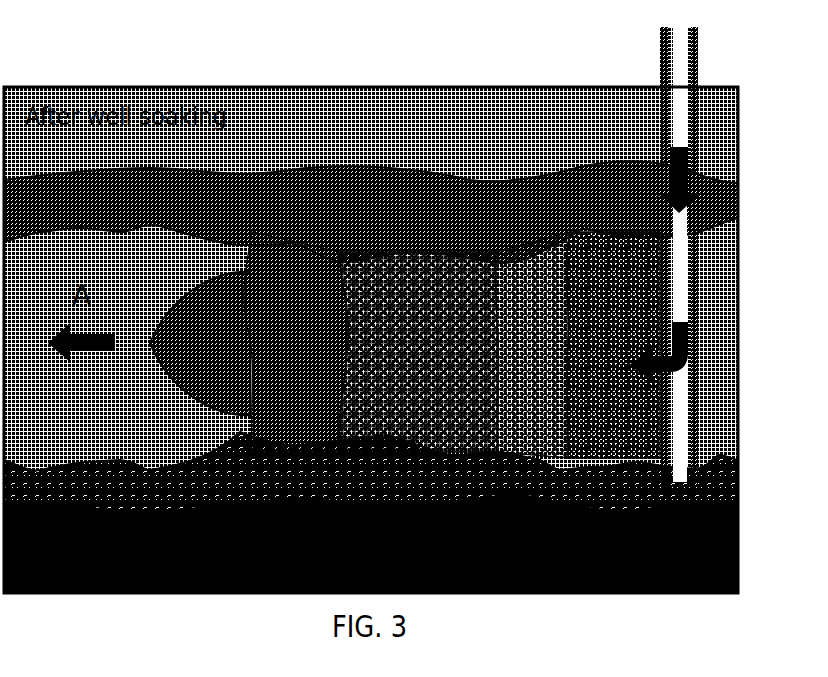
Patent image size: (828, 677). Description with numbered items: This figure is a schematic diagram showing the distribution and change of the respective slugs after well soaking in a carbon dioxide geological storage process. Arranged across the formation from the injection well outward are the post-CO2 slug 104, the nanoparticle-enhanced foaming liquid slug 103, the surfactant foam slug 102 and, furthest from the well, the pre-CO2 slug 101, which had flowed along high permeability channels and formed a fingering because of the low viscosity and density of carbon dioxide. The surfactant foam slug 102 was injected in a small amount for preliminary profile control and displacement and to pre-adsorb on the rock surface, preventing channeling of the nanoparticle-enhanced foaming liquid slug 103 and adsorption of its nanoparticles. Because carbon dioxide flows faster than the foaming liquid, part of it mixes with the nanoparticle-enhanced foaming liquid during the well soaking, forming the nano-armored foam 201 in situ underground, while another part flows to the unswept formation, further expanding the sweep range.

The pre-CO2 slug 101 is at (200, 343).
The surfactant foam slug 102 is at (296, 342).
The nanoparticle-enhanced foaming liquid slug 103 is at (532, 345).
The post-CO2 slug 104 is at (613, 345).
The nano-armored foam 201 is at (409, 257).